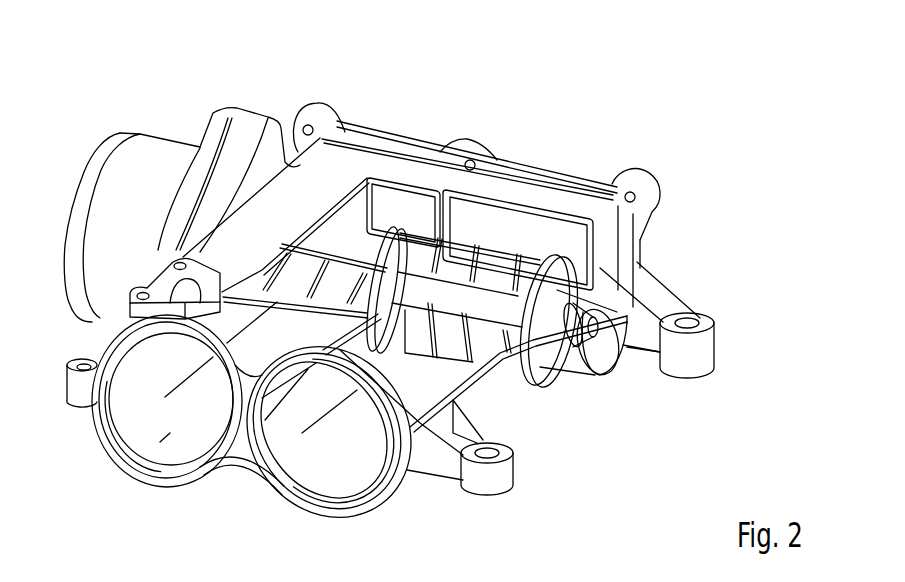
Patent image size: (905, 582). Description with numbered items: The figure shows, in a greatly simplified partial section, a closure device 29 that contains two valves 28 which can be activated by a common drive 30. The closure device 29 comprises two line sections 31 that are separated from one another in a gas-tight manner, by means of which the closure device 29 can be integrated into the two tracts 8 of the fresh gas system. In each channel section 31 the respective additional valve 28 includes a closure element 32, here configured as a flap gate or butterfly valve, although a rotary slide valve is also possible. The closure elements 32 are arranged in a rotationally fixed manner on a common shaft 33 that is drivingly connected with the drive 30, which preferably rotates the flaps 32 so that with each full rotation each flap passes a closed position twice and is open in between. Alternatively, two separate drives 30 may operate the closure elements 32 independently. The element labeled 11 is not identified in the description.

The closure device 29 is at (657, 130).
The drive 30 is at (148, 151).
The additional valve 28 is at (410, 213).
The closure element 32 is at (373, 205).
The tract 8 is at (447, 160).
The shaft with end disks 11 is at (490, 215).
The common shaft 33 is at (580, 330).
The line section 31 is at (172, 433).